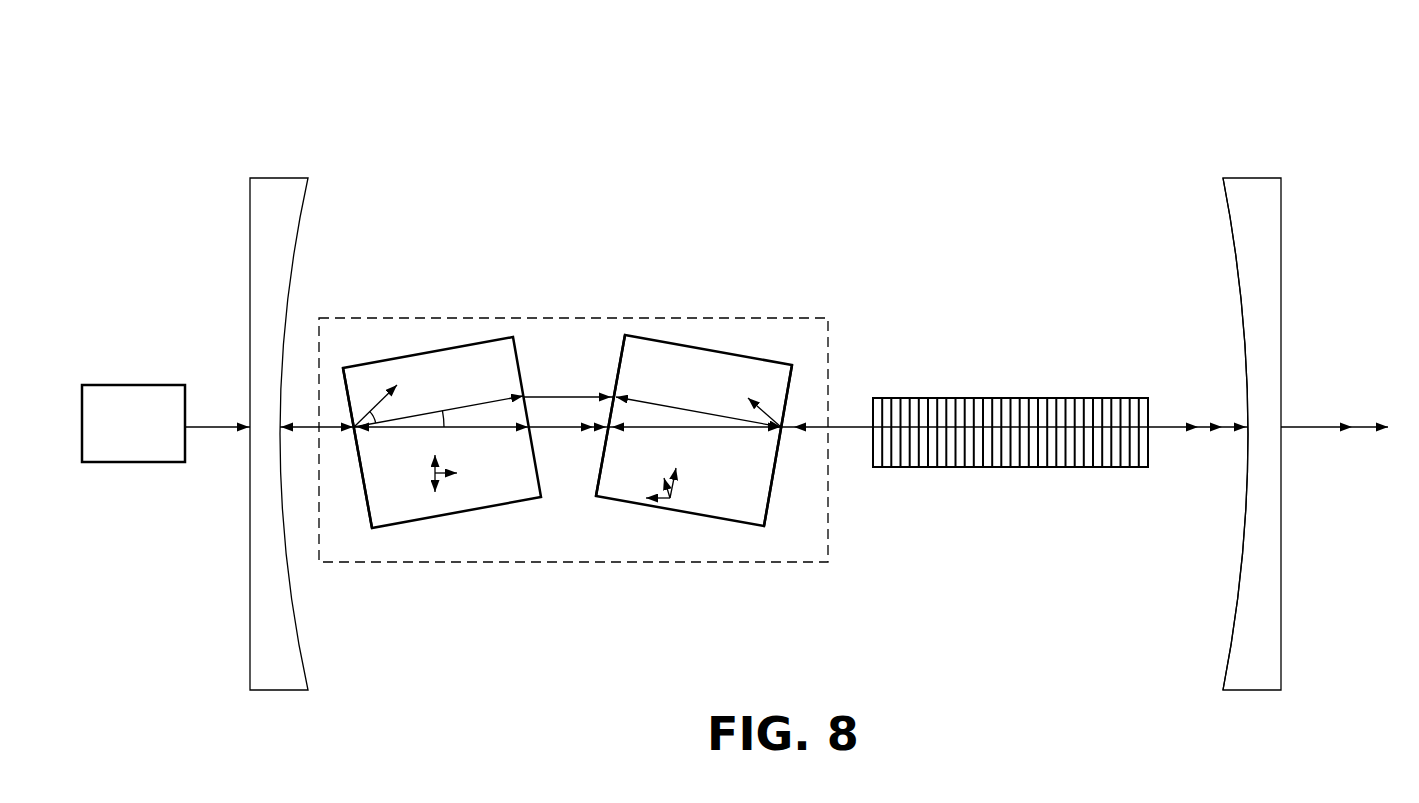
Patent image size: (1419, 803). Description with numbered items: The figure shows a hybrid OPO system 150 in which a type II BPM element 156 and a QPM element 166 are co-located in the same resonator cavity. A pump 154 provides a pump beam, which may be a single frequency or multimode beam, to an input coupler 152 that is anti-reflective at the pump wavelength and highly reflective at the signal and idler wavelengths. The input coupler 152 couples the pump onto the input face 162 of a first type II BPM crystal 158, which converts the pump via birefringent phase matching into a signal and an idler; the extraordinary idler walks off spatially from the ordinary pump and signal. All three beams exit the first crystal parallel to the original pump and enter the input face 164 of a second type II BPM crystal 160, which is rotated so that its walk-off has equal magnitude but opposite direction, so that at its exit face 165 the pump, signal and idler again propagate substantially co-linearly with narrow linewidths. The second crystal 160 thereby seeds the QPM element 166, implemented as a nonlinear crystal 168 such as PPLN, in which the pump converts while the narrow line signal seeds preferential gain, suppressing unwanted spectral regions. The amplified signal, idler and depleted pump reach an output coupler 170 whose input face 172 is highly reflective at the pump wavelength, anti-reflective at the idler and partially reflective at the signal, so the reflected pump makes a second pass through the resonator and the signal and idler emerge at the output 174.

The hybrid OPO system 150 is at (1290, 109).
The input coupler 152 is at (270, 178).
The pump 154 is at (130, 385).
The type II BPM element 156 is at (617, 318).
The first type II BPM crystal 158 is at (420, 352).
The second type II BPM crystal 160 is at (723, 352).
The input face of the first crystal 162 is at (365, 490).
The input face of the second crystal 164 is at (616, 357).
The exit face of the second crystal 165 is at (792, 383).
The QPM element 166 is at (1010, 432).
The nonlinear crystal 168 is at (988, 468).
The output coupler 170 is at (1248, 178).
The input face of the output coupler 172 is at (1235, 250).
The output 174 is at (1312, 412).